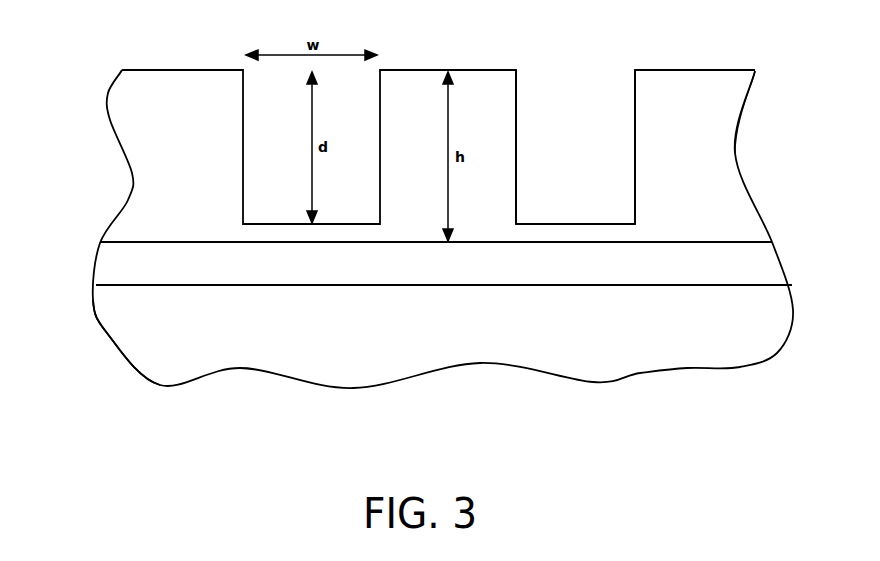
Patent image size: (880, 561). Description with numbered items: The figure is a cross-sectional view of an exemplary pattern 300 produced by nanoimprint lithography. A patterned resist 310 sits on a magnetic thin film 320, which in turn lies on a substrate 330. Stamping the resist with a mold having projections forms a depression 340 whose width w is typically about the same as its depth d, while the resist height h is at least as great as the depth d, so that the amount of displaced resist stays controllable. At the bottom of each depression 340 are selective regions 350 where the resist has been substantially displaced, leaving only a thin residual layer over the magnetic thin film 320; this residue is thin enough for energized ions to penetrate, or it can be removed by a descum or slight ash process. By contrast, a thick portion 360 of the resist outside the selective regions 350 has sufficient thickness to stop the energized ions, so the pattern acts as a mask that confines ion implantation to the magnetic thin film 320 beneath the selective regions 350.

The pattern 300 is at (178, 70).
The patterned resist 310 is at (737, 97).
The magnetic thin film 320 is at (108, 262).
The substrate 330 is at (118, 330).
The depression 340 is at (563, 97).
The selective regions 350 is at (282, 232).
The portion 360 is at (470, 83).